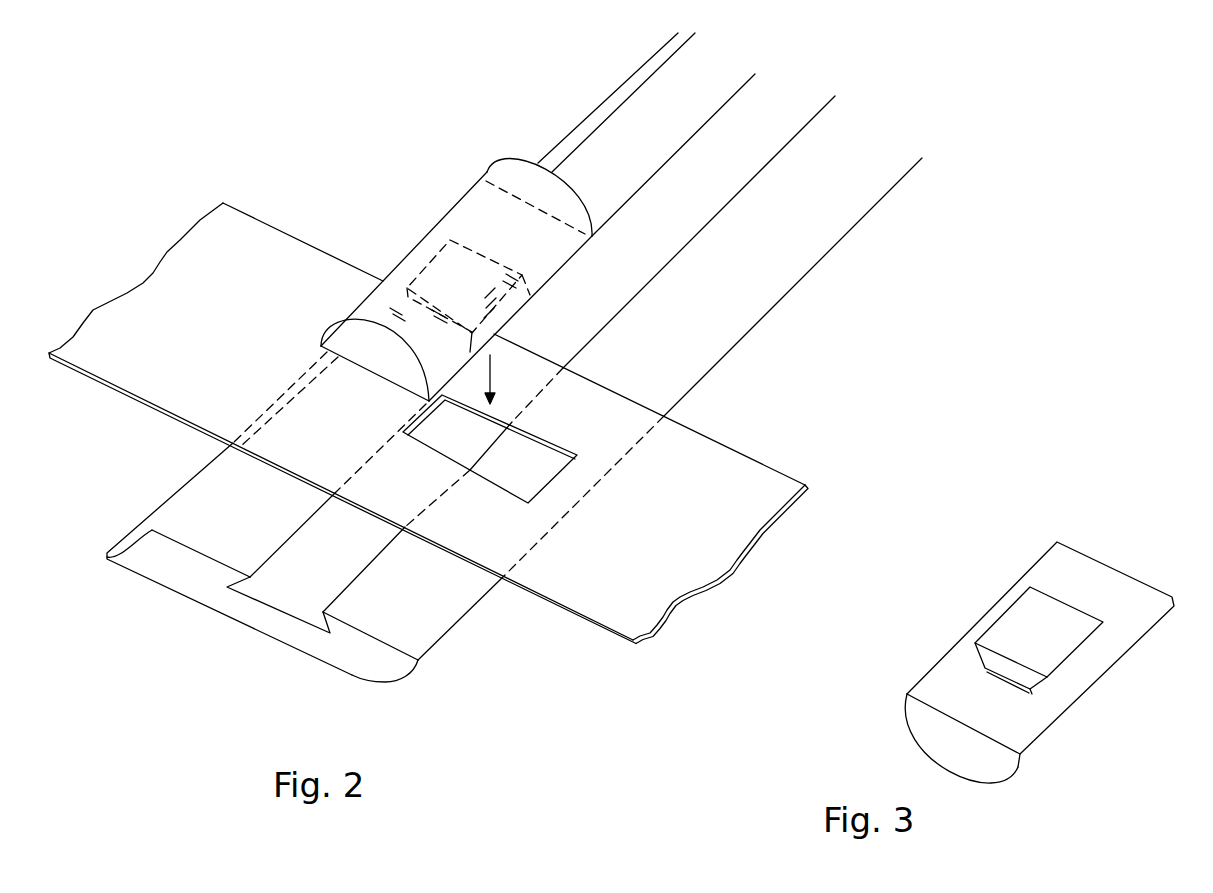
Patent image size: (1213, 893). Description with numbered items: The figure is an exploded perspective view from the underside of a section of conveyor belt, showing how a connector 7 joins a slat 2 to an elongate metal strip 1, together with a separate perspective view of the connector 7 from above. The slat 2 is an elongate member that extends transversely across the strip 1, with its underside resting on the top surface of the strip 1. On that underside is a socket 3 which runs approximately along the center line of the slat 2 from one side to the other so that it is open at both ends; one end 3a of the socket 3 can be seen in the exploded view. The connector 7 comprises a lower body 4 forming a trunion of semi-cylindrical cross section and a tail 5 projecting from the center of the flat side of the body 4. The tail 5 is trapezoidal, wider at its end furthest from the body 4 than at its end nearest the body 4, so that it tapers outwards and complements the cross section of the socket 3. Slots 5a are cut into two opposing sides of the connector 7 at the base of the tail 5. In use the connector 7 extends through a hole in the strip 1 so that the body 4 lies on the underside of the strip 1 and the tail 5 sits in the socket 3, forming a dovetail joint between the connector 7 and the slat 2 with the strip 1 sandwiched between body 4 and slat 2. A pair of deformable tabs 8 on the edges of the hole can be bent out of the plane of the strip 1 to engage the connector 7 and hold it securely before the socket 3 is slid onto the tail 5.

In FIG. 2, the strip 1 is at (641, 590).
In FIG. 2, the slat 2 is at (814, 213).
In FIG. 2, the socket 3 is at (282, 547).
In FIG. 2, the end of socket 3a is at (247, 597).
In FIG. 2, the lower body 4 is at (509, 167).
In FIG. 3, the lower body 4 is at (925, 733).
In FIG. 2, the tail 5 is at (425, 268).
In FIG. 3, the tail 5 is at (1070, 638).
In FIG. 3, the slots 5a is at (990, 672).
In FIG. 2, the connector 7 is at (472, 229).
In FIG. 3, the connector 7 is at (1005, 635).
In FIG. 2, the deformable tabs 8 is at (470, 471).